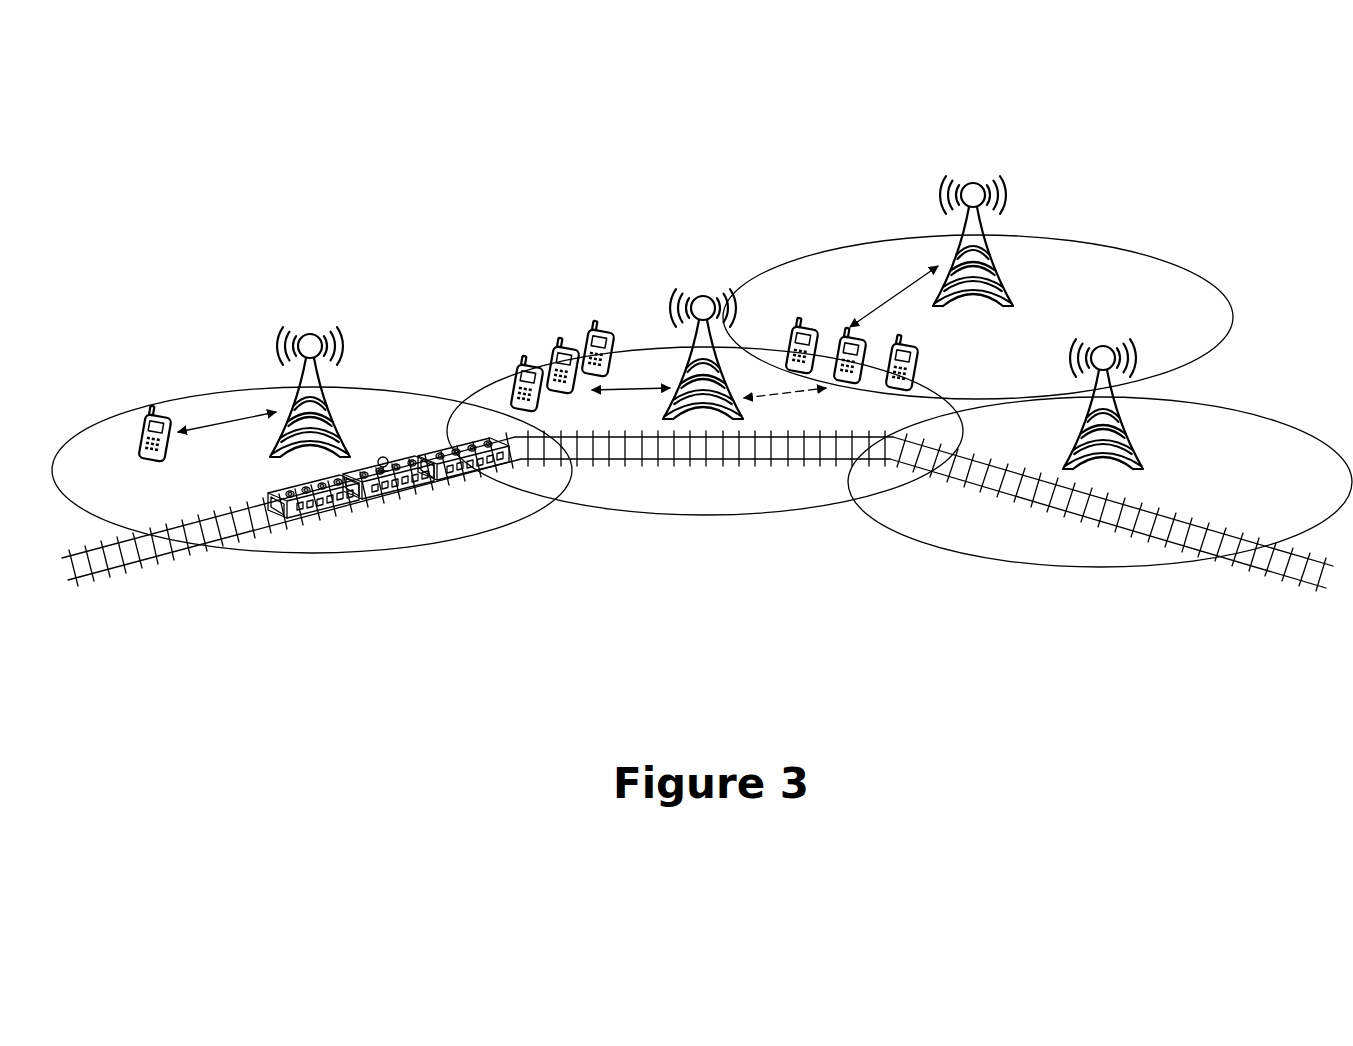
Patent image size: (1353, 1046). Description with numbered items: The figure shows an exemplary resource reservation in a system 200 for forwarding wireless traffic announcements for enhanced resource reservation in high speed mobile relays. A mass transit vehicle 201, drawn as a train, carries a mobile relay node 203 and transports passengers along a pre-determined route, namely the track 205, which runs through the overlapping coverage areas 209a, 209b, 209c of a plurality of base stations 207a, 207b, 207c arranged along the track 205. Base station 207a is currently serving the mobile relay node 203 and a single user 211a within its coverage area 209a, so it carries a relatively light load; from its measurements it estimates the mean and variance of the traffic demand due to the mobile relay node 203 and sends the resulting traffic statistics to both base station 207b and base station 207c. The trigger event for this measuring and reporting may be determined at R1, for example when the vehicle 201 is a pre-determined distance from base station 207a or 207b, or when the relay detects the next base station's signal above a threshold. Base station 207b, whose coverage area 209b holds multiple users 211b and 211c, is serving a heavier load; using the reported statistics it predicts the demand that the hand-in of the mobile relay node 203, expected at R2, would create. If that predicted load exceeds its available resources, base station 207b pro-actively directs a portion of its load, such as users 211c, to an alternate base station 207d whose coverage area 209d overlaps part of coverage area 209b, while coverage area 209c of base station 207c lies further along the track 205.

The data flow diagram 200 is at (707, 713).
The mass transit vehicle 201 is at (301, 525).
The mobile relay node 203 is at (405, 474).
The track 205 is at (1280, 573).
The base station 207a is at (306, 308).
The base station 207b is at (702, 272).
The base station 207c is at (1108, 339).
The base station 207d is at (972, 172).
The coverage area 209a is at (312, 470).
The coverage area 209b is at (705, 431).
The coverage area 209c is at (1100, 482).
The coverage area 209d is at (978, 317).
The users 211a is at (130, 397).
The users 211b is at (538, 320).
The users 211c is at (830, 320).
The trigger event point R1 is at (480, 476).
The expected hand-in time R2 is at (587, 460).